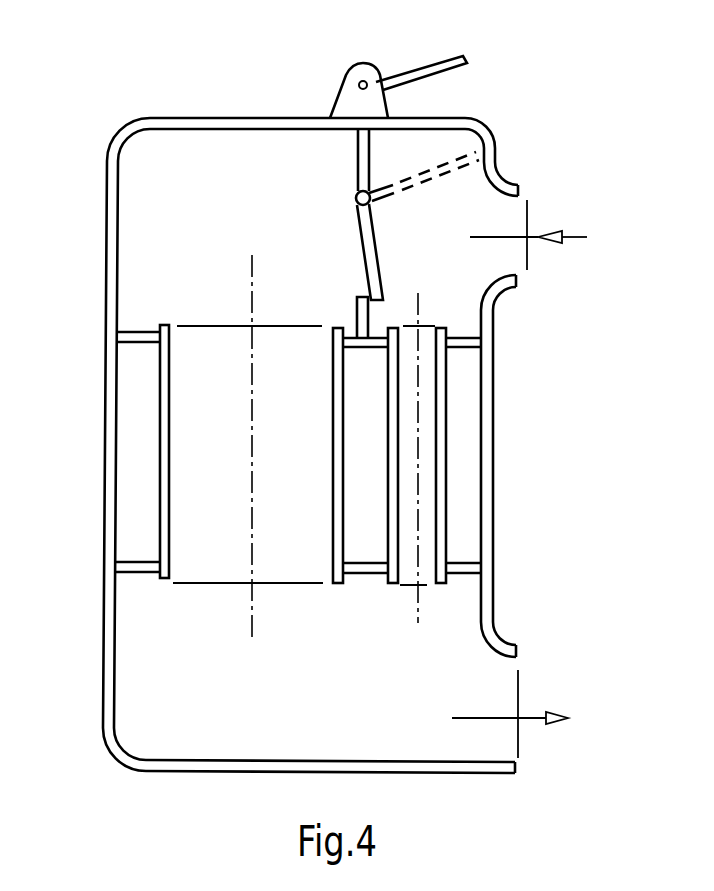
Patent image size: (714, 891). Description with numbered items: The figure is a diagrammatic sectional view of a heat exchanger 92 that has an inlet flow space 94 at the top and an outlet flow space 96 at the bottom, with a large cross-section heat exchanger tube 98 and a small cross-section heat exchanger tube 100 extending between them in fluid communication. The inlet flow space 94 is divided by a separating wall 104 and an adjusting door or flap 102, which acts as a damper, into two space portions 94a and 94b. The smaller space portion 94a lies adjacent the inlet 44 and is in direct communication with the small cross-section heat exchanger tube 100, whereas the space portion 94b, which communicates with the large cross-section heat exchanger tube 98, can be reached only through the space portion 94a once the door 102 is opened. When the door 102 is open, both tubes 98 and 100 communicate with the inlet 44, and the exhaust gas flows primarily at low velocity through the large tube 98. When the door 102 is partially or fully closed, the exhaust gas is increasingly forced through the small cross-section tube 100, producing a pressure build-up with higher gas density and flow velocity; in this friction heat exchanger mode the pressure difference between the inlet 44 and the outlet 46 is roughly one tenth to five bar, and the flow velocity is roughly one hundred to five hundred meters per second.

The heat exchanger 92 is at (100, 148).
The inlet flow space 94 is at (286, 208).
The space portion 94a is at (492, 222).
The space portion 94b is at (192, 231).
The outlet flow space 96 is at (353, 703).
The large cross-section heat exchanger tube 98 is at (172, 350).
The small cross-section heat exchanger tube 100 is at (428, 335).
The adjusting door 102 is at (378, 258).
The separating wall 104 is at (355, 310).
The inlet 44 is at (519, 211).
The outlet 46 is at (507, 678).